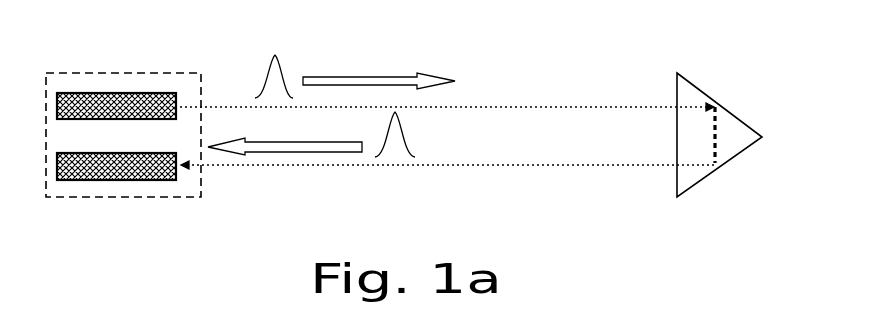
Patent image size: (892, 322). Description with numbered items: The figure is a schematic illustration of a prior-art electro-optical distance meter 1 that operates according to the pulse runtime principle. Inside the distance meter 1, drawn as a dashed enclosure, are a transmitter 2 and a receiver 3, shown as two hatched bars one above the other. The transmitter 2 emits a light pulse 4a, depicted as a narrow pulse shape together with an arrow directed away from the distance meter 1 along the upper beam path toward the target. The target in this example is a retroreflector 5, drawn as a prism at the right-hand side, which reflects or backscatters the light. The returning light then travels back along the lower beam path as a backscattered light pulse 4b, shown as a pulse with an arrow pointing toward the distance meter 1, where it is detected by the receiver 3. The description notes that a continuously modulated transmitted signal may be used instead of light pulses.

The electro-optical distance meter 1 is at (62, 198).
The transmitter 2 is at (107, 100).
The receiver 3 is at (145, 178).
The light pulse 4a is at (277, 57).
The backscattered light pulse 4b is at (402, 148).
The retroreflector 5 is at (690, 93).